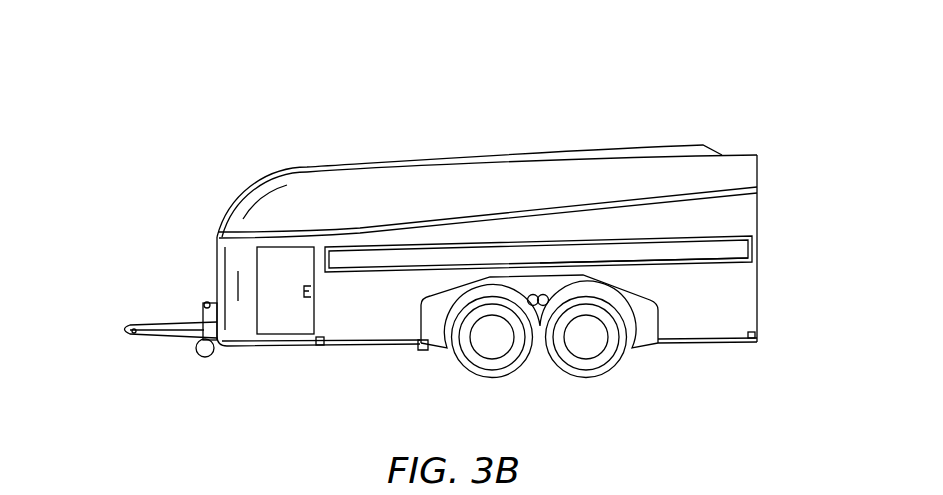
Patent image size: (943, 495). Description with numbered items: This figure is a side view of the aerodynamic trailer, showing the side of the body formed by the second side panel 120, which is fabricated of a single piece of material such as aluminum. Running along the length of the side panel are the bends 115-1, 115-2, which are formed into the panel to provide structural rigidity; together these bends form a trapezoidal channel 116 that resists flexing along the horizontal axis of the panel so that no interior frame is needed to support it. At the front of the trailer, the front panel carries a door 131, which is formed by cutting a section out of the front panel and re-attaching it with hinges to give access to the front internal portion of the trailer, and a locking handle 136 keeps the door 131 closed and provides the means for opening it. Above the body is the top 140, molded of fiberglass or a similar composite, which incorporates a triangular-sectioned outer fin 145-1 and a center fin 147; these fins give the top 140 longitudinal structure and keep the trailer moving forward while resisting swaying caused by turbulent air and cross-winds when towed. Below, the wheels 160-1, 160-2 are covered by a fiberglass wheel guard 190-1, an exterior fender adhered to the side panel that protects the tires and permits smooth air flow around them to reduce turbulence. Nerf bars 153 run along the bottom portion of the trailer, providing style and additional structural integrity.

The bend 115-1 is at (381, 247).
The bend 115-2 is at (690, 253).
The trapezoidal channel 116 is at (540, 247).
The second side panel 120 is at (343, 312).
The door 131 is at (257, 293).
The locking handle 136 is at (300, 278).
The top 140 is at (263, 200).
The outer fin 145-1 is at (700, 173).
The center fin 147 is at (665, 147).
The nerf bars 153 is at (333, 352).
The wheel 160-1 is at (472, 362).
The wheel 160-2 is at (593, 366).
The wheel guard 190-1 is at (639, 314).